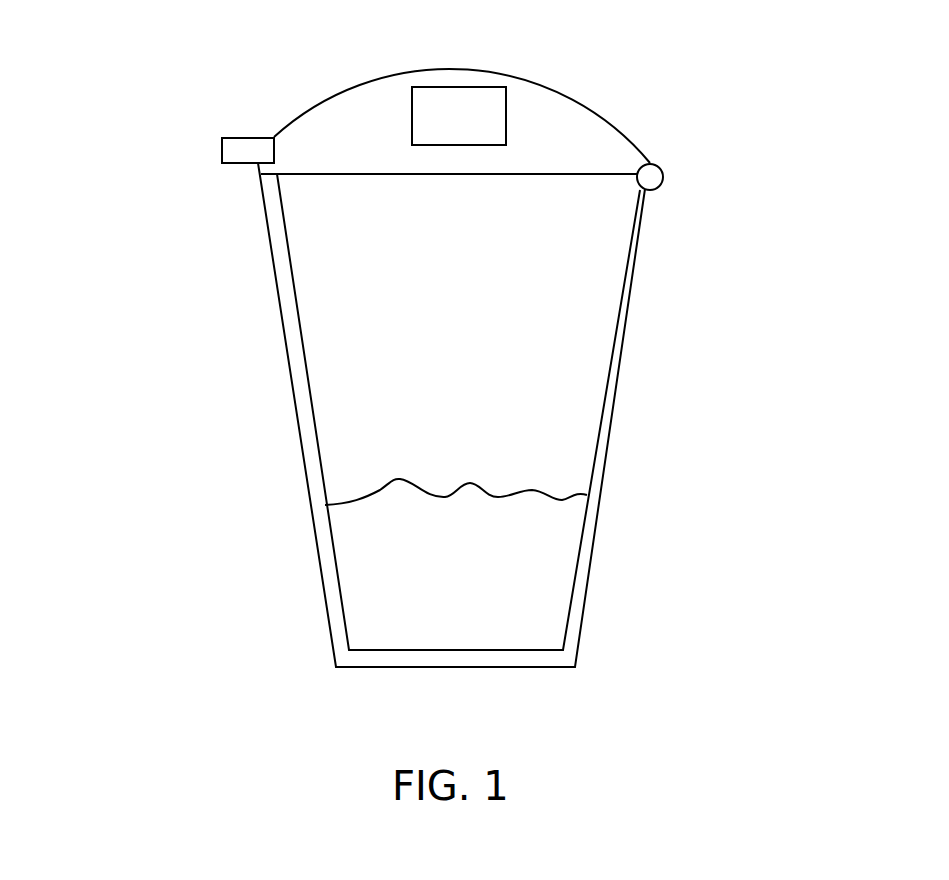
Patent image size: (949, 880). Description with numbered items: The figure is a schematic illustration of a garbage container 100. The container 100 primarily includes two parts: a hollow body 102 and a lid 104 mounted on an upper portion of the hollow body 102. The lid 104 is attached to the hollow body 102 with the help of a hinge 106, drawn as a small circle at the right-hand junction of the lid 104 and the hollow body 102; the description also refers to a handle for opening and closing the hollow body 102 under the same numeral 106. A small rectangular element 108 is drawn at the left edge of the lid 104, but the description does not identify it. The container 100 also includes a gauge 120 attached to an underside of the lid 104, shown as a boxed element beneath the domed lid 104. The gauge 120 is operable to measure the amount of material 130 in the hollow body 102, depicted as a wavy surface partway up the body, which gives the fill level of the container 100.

The garbage container 100 is at (527, 350).
The hollow body 102 is at (617, 362).
The lid 104 is at (332, 90).
The hinge 106 is at (664, 178).
The module 108 is at (222, 148).
The gauge 120 is at (434, 130).
The material 130 is at (382, 488).